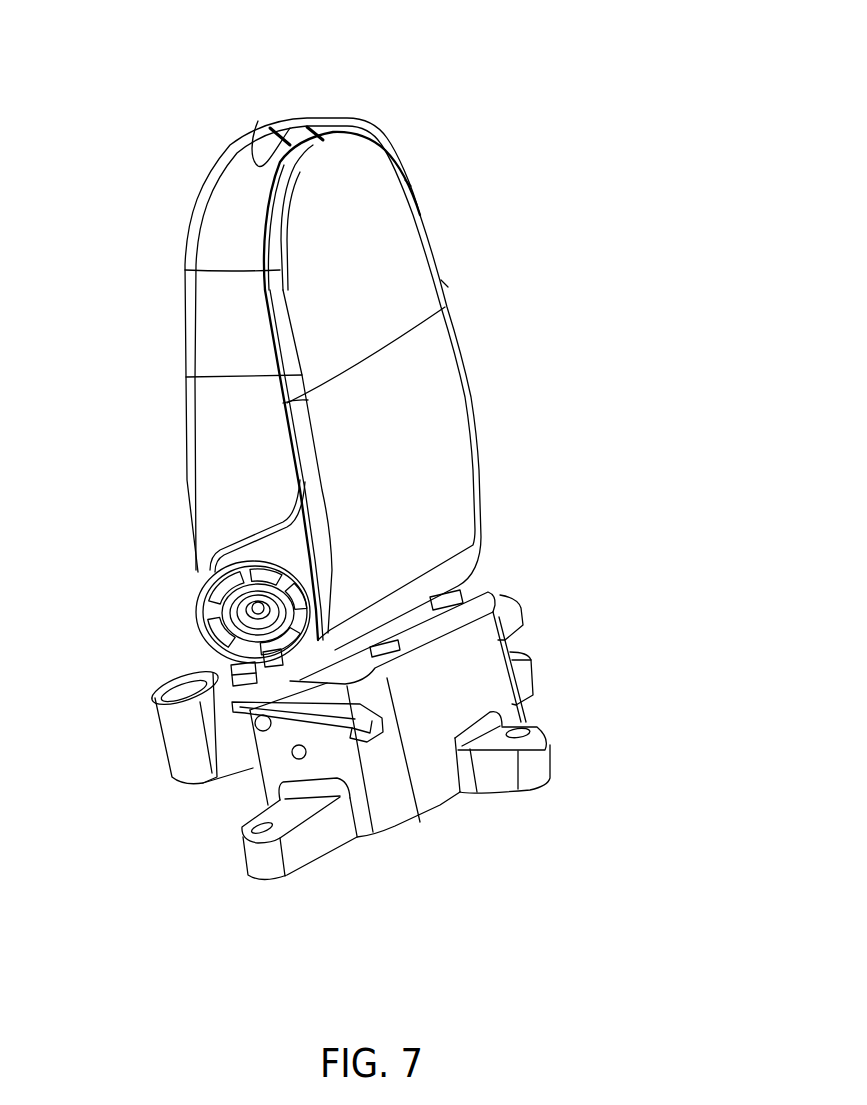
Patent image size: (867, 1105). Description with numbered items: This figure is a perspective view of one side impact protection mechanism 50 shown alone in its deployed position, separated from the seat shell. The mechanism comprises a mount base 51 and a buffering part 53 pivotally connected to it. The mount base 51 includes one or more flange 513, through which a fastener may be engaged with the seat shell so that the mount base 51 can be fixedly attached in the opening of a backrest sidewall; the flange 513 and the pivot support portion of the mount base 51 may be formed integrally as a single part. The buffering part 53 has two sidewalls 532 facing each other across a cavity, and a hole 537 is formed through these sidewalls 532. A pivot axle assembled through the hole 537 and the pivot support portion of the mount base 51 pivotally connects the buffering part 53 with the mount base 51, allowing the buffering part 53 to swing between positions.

The side impact protection mechanism 50 is at (690, 453).
The buffering part 53 is at (425, 408).
The mount base 51 is at (417, 730).
The flange 513 is at (312, 838).
The sidewalls 532 is at (229, 660).
The hole 537 is at (258, 608).